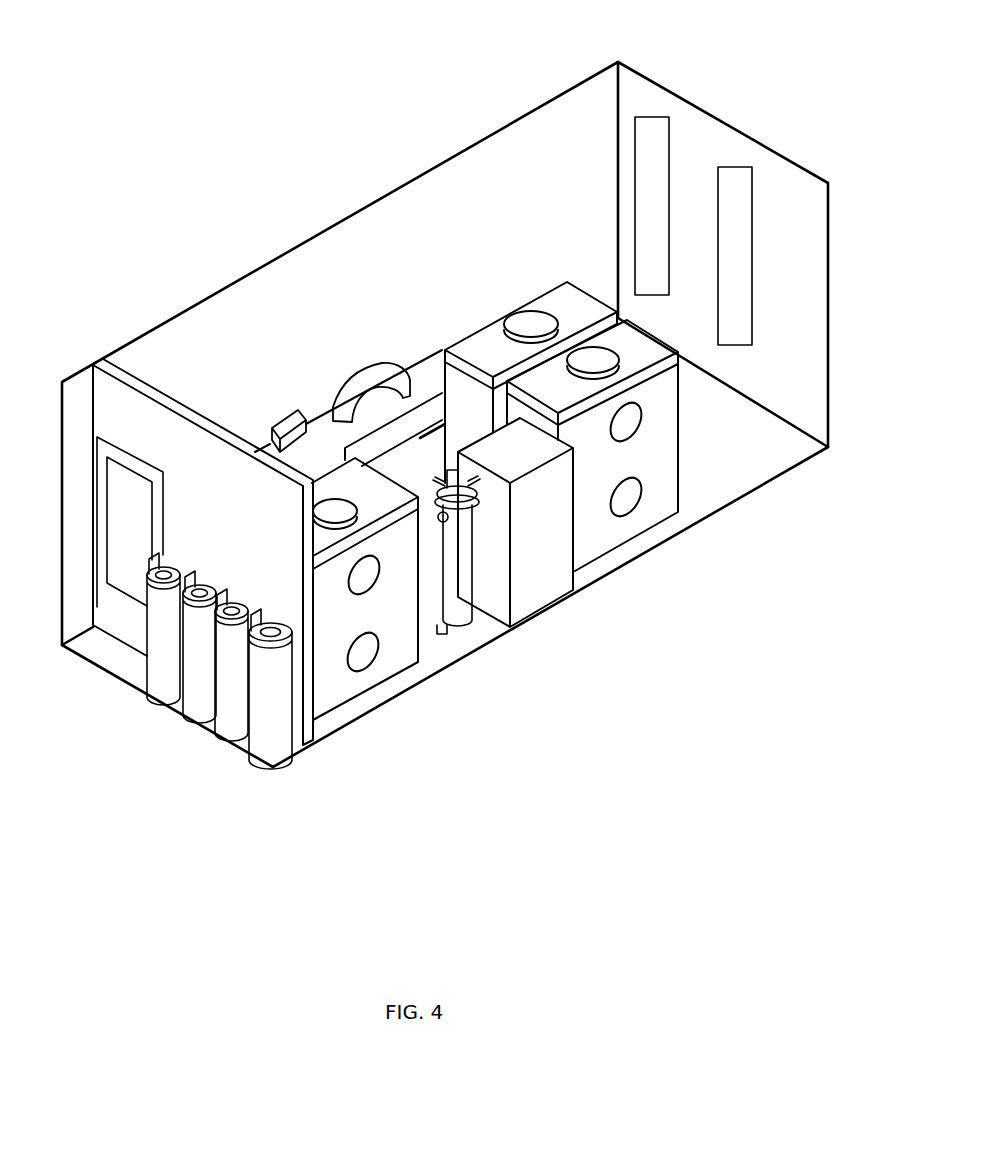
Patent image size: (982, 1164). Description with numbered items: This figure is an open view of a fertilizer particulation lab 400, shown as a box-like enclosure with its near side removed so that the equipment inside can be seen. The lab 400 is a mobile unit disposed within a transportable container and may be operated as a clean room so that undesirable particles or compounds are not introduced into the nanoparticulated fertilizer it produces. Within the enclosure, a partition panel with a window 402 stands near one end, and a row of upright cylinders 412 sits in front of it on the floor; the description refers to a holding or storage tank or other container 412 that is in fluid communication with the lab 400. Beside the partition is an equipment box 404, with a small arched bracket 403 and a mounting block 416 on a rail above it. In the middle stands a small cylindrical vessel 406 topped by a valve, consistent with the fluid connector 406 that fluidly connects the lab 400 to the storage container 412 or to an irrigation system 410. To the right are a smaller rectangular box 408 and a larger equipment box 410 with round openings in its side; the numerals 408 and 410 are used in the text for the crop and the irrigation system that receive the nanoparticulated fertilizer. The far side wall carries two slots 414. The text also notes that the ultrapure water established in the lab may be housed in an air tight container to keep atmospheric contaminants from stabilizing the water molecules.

The lab 400 is at (393, 222).
The window opening in partition panel 402 is at (133, 522).
The arched handle / bracket on rail 403 is at (370, 392).
The front-left equipment box 404 is at (393, 658).
The fluid connector 406 is at (457, 592).
The crop 408 is at (525, 582).
The irrigation system 410 is at (655, 487).
The container 412 is at (167, 665).
The vent slots in side wall 414 is at (656, 140).
The small mounting block 416 is at (283, 420).